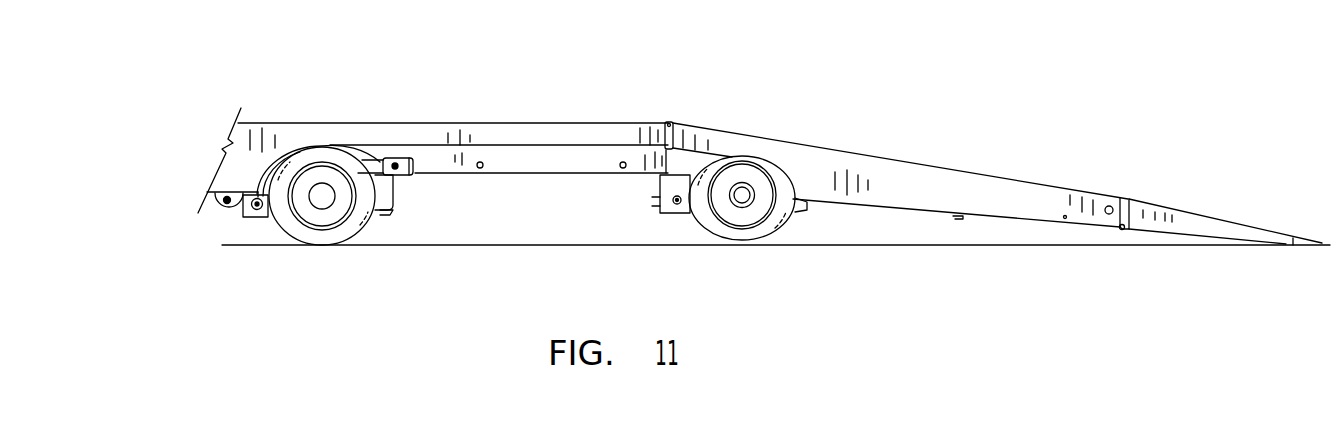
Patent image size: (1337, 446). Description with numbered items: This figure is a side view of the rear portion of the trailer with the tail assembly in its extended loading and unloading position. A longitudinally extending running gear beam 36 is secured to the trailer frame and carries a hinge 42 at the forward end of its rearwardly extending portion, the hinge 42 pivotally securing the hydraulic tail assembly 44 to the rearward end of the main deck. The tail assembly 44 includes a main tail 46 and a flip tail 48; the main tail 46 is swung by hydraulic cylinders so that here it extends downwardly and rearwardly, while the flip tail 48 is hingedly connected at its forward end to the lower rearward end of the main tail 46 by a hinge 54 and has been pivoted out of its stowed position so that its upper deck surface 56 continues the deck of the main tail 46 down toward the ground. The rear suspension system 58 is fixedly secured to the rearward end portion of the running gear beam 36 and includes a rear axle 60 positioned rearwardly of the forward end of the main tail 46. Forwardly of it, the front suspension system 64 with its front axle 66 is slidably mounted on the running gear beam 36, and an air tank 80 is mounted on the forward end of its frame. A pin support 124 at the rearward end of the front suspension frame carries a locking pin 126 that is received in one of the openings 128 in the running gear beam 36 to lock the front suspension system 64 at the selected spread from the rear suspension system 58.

The running gear beam 36 is at (548, 162).
The hinge 42 is at (669, 128).
The hydraulic tail assembly 44 is at (963, 148).
The main tail 46 is at (1010, 200).
The flip tail 48 is at (1172, 208).
The hinge 54 is at (1127, 225).
The upper deck surface 56 is at (1222, 220).
The rear suspension system 58 is at (764, 237).
The rear axle 60 is at (742, 195).
The front suspension system 64 is at (306, 240).
The front axle 66 is at (330, 198).
The air tank 80 is at (224, 209).
The pin support 124 is at (414, 152).
The locking pin 126 is at (415, 177).
The opening 128 is at (623, 169).